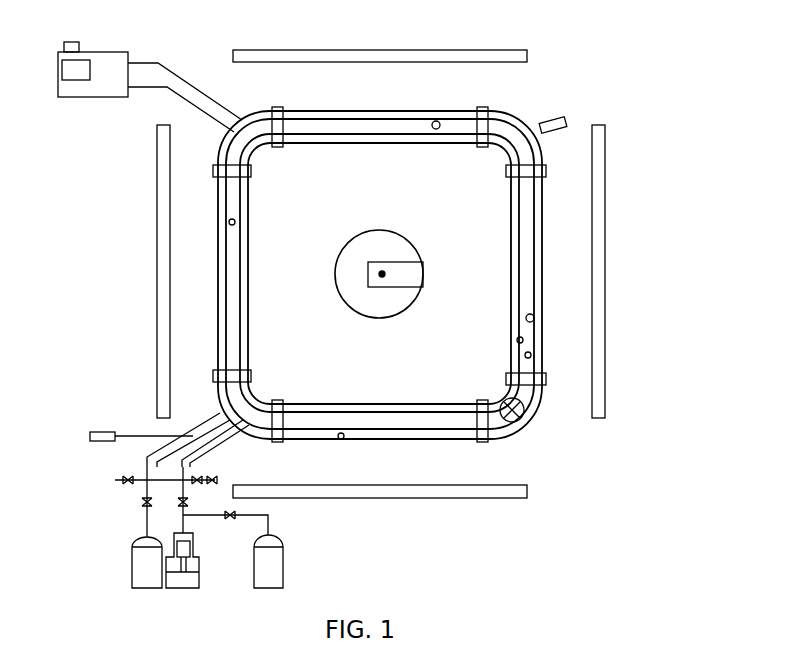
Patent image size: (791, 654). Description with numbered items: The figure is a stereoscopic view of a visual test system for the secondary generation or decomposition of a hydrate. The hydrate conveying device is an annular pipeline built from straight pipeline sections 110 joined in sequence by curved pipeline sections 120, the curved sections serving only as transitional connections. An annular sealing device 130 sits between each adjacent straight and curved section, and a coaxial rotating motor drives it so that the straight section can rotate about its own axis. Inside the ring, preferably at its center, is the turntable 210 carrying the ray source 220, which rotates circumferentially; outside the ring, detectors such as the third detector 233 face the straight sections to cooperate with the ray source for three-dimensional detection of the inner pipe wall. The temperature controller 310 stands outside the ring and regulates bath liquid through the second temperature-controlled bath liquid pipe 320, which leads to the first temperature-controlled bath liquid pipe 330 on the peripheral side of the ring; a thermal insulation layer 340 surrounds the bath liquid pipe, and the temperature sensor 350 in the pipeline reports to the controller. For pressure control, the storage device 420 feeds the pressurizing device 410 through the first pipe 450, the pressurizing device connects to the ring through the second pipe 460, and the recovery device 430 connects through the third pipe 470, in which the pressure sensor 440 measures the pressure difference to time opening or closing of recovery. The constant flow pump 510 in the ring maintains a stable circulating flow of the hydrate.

The straight pipeline section 110 is at (225, 262).
The curved pipeline section 120 is at (235, 407).
The annular sealing device 130 is at (528, 376).
The turntable 210 is at (388, 245).
The ray source 220 is at (400, 273).
The third detector 233 is at (600, 297).
The temperature controller 310 is at (95, 75).
The second temperature-controlled bath liquid pipe 320 is at (182, 75).
The first temperature-controlled bath liquid pipe 330 is at (327, 117).
The thermal insulation layer 340 is at (392, 110).
The temperature sensor 350 is at (552, 118).
The pressurizing device 410 is at (183, 577).
The storage device 420 is at (272, 583).
The recovery device 430 is at (128, 584).
The pressure sensor 440 is at (106, 434).
The first pipe 450 is at (243, 518).
The second pipe 460 is at (175, 484).
The third pipe 470 is at (153, 456).
The constant flow pump 510 is at (525, 428).